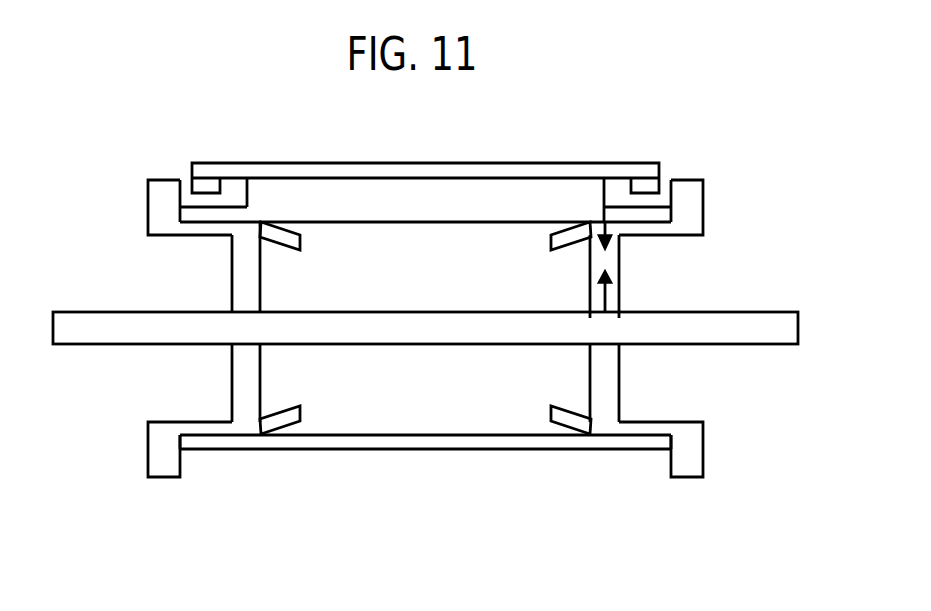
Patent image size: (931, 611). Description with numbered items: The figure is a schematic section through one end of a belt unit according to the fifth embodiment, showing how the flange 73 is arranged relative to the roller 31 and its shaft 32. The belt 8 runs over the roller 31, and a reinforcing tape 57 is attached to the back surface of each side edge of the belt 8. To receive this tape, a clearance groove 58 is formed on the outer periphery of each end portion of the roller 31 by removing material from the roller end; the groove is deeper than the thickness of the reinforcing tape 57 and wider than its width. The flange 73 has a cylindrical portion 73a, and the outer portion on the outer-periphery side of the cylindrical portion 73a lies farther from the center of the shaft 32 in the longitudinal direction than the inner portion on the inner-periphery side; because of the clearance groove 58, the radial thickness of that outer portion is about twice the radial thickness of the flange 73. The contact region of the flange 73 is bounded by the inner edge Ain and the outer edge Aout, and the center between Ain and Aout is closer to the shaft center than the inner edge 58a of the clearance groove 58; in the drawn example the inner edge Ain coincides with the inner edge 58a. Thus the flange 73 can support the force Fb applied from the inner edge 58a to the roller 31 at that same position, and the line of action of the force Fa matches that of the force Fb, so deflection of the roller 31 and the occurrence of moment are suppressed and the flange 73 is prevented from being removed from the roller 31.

The belt 8 is at (489, 163).
The roller 31 is at (403, 215).
The shaft 32 is at (792, 325).
The reinforcing tape 57 is at (205, 185).
The clearance groove 58 is at (195, 200).
The inner edge of the clearance groove 58a is at (605, 197).
The flange 73 is at (238, 273).
The cylindrical portion 73a is at (633, 228).
The force Fa is at (602, 298).
The force Fb is at (595, 228).
The inner edge Ain is at (590, 318).
The outer edge Aout is at (619, 318).